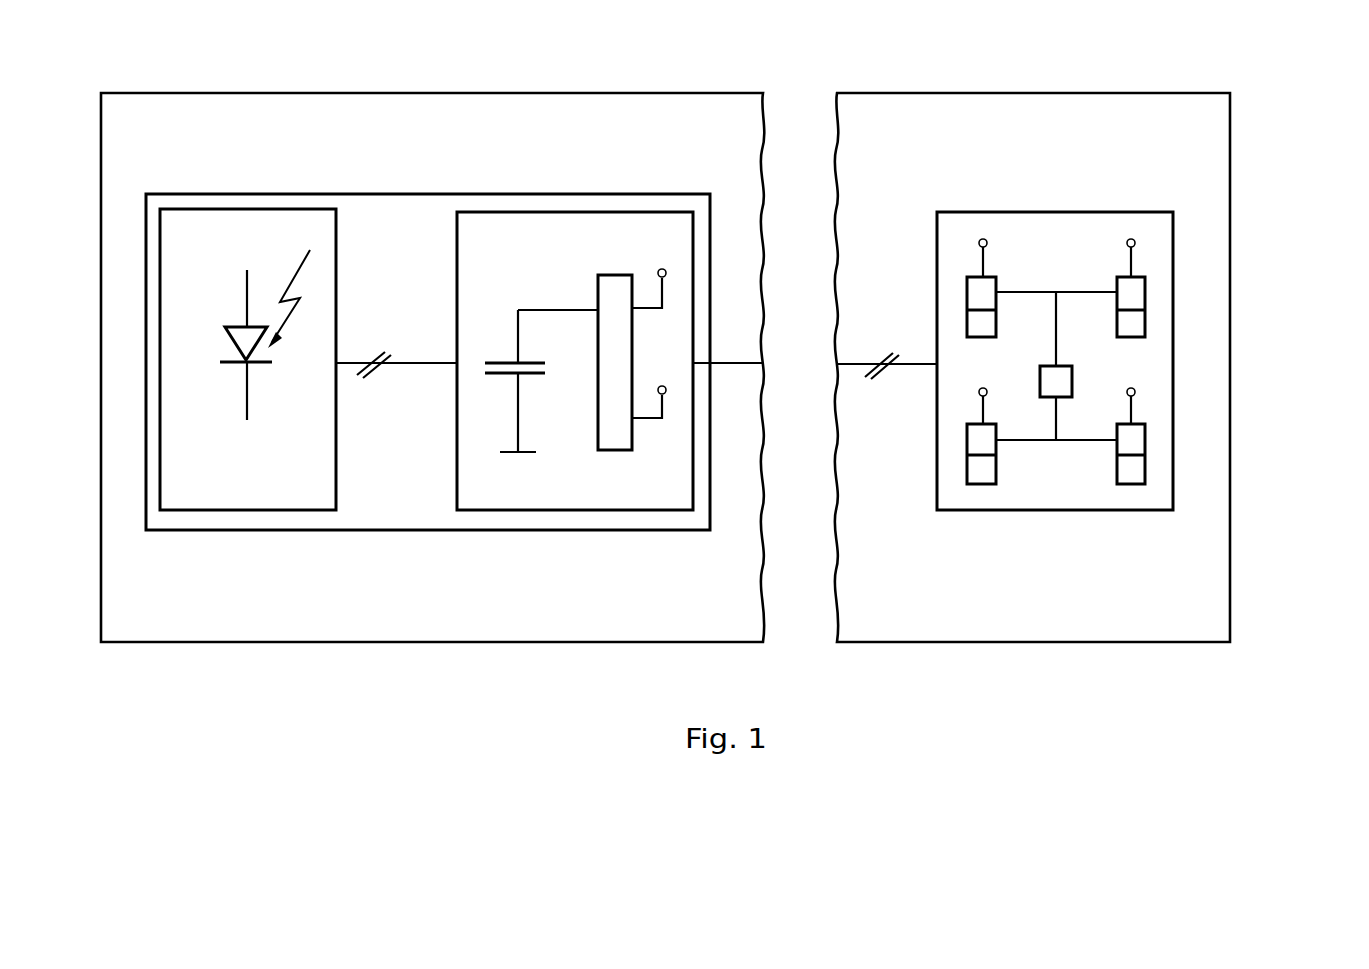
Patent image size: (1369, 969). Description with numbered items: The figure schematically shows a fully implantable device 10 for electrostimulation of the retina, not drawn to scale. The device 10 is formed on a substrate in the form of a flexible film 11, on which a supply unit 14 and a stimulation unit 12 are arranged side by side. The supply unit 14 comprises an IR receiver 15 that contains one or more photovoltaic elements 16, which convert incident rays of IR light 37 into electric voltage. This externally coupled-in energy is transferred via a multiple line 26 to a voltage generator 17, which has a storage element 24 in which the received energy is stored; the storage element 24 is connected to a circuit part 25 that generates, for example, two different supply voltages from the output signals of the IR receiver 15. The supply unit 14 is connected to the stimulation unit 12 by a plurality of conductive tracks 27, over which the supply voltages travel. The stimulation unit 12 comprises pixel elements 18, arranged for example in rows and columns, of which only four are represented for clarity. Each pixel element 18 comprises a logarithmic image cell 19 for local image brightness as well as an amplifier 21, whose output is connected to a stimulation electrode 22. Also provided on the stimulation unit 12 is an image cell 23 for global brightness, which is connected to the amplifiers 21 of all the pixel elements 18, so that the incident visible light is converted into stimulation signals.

The device 10 is at (1240, 152).
The flexible film 11 is at (565, 118).
The stimulation unit 12 is at (1163, 312).
The supply unit 14 is at (392, 217).
The IR receiver 15 is at (258, 475).
The photovoltaic element 16 is at (255, 318).
The voltage generator 17 is at (613, 487).
The pixel element 18 is at (1150, 468).
The logarithmic image cell 19 is at (1115, 472).
The amplifier 21 is at (1130, 438).
The stimulation electrode 22 is at (1137, 390).
The image cell for global brightness 23 is at (1062, 365).
The storage element 24 is at (493, 375).
The circuit part 25 is at (617, 400).
The multiple line 26 is at (398, 365).
The conductive tracks 27 is at (912, 368).
The rays of IR light 37 is at (300, 308).